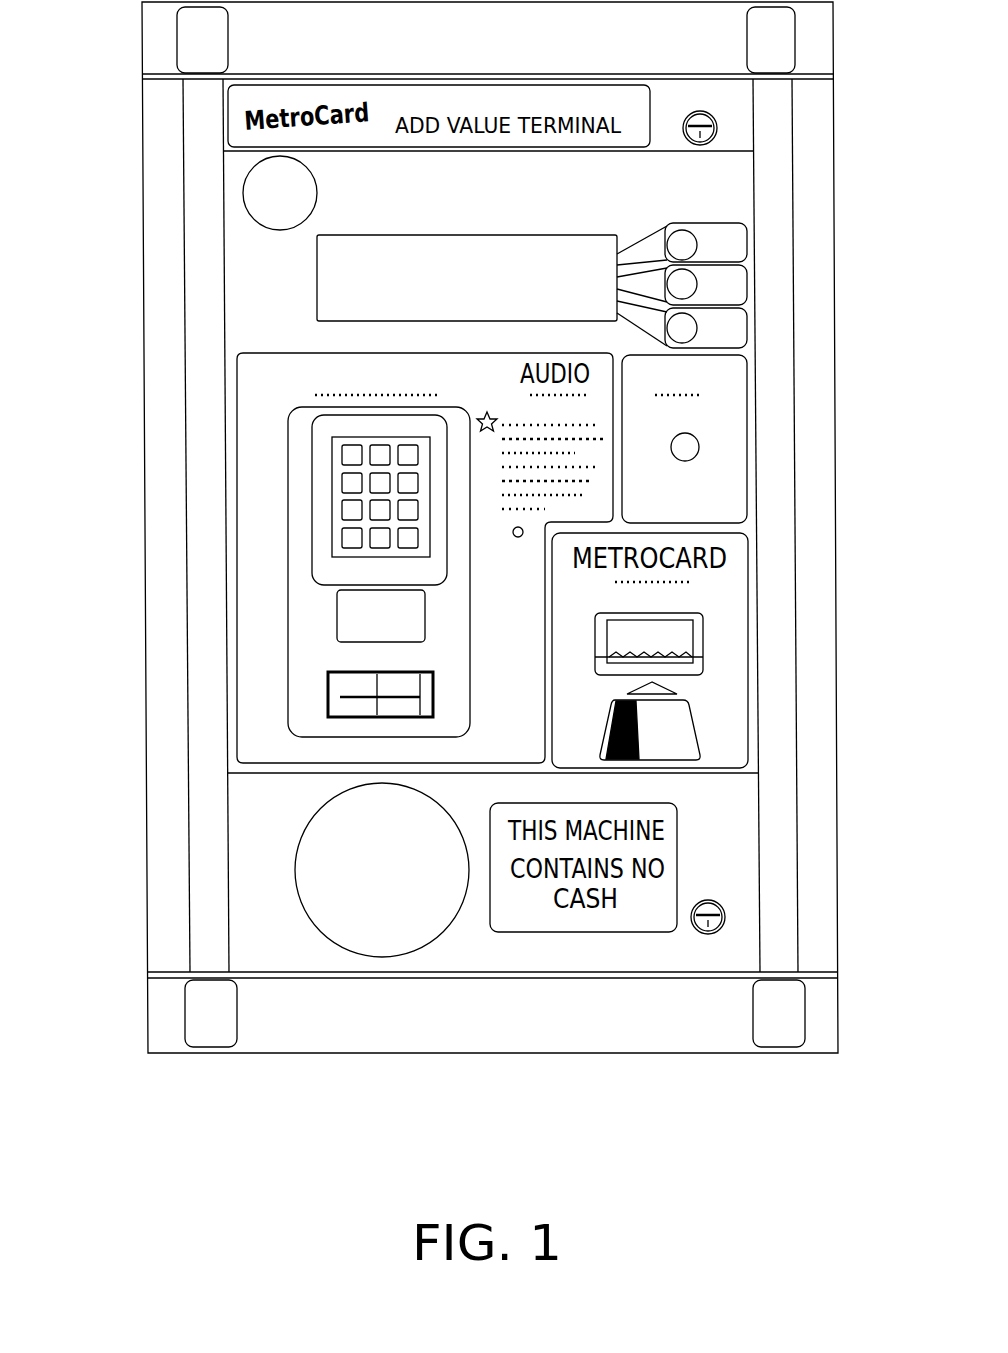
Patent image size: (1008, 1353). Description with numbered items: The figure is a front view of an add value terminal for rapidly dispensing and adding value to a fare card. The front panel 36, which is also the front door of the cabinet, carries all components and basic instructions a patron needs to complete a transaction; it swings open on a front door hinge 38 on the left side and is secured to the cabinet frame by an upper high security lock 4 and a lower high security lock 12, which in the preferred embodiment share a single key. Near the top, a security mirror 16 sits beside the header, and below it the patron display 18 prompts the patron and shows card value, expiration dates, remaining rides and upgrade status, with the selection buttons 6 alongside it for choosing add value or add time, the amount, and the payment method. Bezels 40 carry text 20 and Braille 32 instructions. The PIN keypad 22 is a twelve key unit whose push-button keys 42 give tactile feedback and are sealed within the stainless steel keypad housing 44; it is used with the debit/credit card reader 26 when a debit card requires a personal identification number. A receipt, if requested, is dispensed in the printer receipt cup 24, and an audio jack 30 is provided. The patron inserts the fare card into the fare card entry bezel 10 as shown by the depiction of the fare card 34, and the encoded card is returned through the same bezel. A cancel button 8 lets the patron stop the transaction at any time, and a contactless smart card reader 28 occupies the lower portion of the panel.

The upper high security lock 4 is at (700, 110).
The selection buttons 6 is at (747, 248).
The cancel button 8 is at (670, 445).
The fare card entry bezel 10 is at (703, 640).
The lower high security lock 12 is at (700, 935).
The security mirror 16 is at (245, 195).
The patron display 18 is at (317, 252).
The text instructions 20 is at (310, 362).
The PIN keypad 22 is at (338, 505).
The printer receipt cup 24 is at (420, 637).
The debit/credit card reader 26 is at (432, 685).
The contactless smart card reader 28 is at (312, 912).
The audio jack 30 is at (513, 536).
The Braille instructions 32 is at (693, 397).
The fare card depiction 34 is at (692, 745).
The front panel 36 is at (742, 182).
The front door hinge 38 is at (200, 103).
The bezels 40 is at (245, 392).
The push-button keys 42 is at (377, 522).
The keypad housing 44 is at (320, 452).